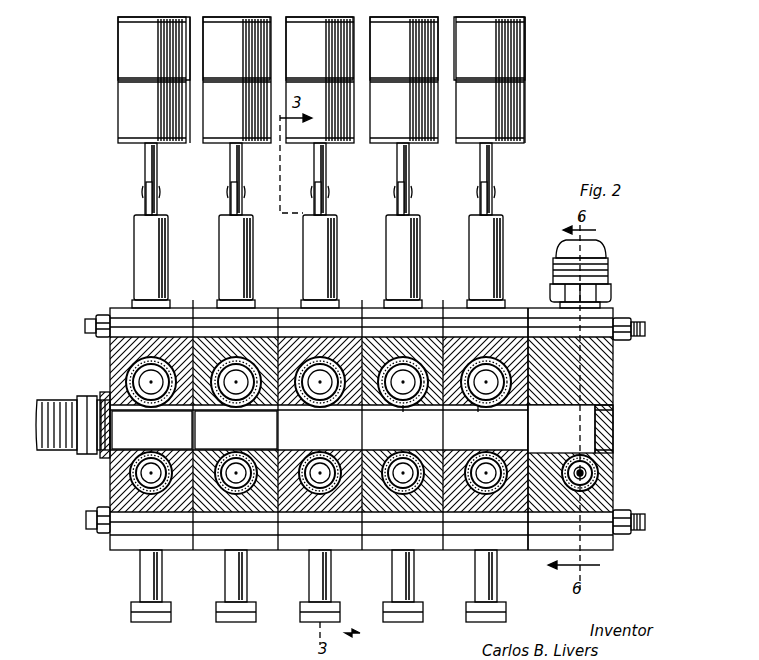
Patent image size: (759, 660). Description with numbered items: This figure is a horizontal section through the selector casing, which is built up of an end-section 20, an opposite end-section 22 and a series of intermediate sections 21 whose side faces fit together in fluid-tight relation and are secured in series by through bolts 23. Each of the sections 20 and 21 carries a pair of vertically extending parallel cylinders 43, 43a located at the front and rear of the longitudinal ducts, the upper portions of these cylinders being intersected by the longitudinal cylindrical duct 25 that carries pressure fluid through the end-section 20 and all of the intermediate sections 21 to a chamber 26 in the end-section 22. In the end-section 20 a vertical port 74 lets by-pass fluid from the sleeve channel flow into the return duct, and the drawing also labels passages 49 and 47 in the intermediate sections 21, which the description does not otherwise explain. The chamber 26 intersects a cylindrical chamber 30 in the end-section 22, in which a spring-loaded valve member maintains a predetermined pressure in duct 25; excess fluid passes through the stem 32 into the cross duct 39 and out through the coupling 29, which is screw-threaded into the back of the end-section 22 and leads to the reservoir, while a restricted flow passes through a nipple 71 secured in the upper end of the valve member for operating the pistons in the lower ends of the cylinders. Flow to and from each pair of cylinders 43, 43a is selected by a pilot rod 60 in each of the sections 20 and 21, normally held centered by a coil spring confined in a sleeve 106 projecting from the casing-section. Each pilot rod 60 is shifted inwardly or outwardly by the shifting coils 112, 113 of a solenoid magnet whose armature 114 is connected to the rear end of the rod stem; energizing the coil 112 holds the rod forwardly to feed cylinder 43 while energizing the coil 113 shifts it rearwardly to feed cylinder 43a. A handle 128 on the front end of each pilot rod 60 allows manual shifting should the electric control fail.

The shifting coil 113 is at (118, 56).
The shifting coil 112 is at (118, 118).
The armature 114 is at (145, 172).
The sleeve 106 is at (137, 258).
The pilot rod 60 is at (497, 208).
The handle 128 is at (226, 619).
The end-section 20 is at (110, 346).
The cylinder 43 is at (110, 372).
The cylinder 43a is at (403, 360).
The vertical port 74 is at (152, 430).
The longitudinal cylindrical duct 25 is at (236, 430).
The passage 49 is at (403, 412).
The passage 47 is at (478, 412).
The chamber 26 is at (561, 429).
The end-section 22 is at (613, 381).
The cross duct 39 is at (613, 400).
The cylindrical chamber 30 is at (598, 470).
The nipple 71 is at (592, 462).
The stem 32 is at (596, 482).
The through bolt 23 is at (646, 326).
The coupling 29 is at (608, 268).
The intermediate section 21 is at (196, 308).